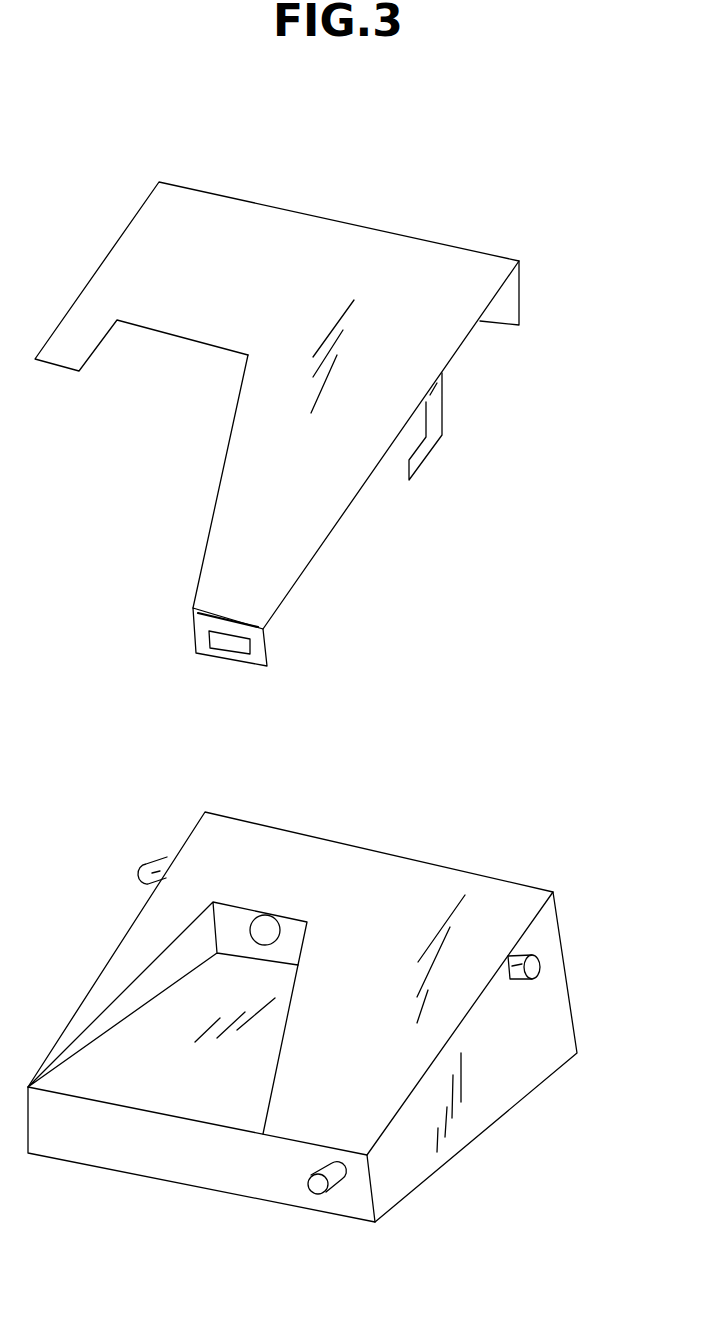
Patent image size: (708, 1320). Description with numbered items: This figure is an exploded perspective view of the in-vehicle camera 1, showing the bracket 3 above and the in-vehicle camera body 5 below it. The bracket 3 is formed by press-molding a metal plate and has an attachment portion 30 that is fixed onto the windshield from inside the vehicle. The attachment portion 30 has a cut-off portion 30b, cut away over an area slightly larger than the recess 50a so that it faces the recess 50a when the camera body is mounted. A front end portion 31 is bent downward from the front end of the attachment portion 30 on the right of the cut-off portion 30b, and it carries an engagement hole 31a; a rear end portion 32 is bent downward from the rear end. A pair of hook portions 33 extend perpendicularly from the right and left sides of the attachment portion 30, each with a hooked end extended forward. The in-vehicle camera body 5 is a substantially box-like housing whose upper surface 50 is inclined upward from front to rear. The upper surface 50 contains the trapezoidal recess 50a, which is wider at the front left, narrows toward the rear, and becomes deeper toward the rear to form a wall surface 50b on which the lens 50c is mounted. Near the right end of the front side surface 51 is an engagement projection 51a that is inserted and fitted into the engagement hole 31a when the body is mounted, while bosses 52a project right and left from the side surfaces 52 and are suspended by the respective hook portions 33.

The in-vehicle camera 1 is at (407, 125).
The bracket 3 is at (468, 248).
The attachment portion 30 is at (326, 232).
The cut-off portion 30b is at (220, 480).
The front end portion 31 is at (261, 656).
The engagement hole 31a is at (247, 642).
The rear end portion 32 is at (521, 295).
The hook portions 33 is at (436, 413).
The in-vehicle camera body 5 is at (557, 887).
The upper surface 50 is at (438, 888).
The recess 50a is at (283, 1020).
The wall surface 50b is at (230, 920).
The lens 50c is at (265, 923).
The front side surface 51 is at (165, 1158).
The engagement projection 51a is at (310, 1198).
The side surfaces 52 is at (478, 1103).
The bosses 52a is at (145, 870).